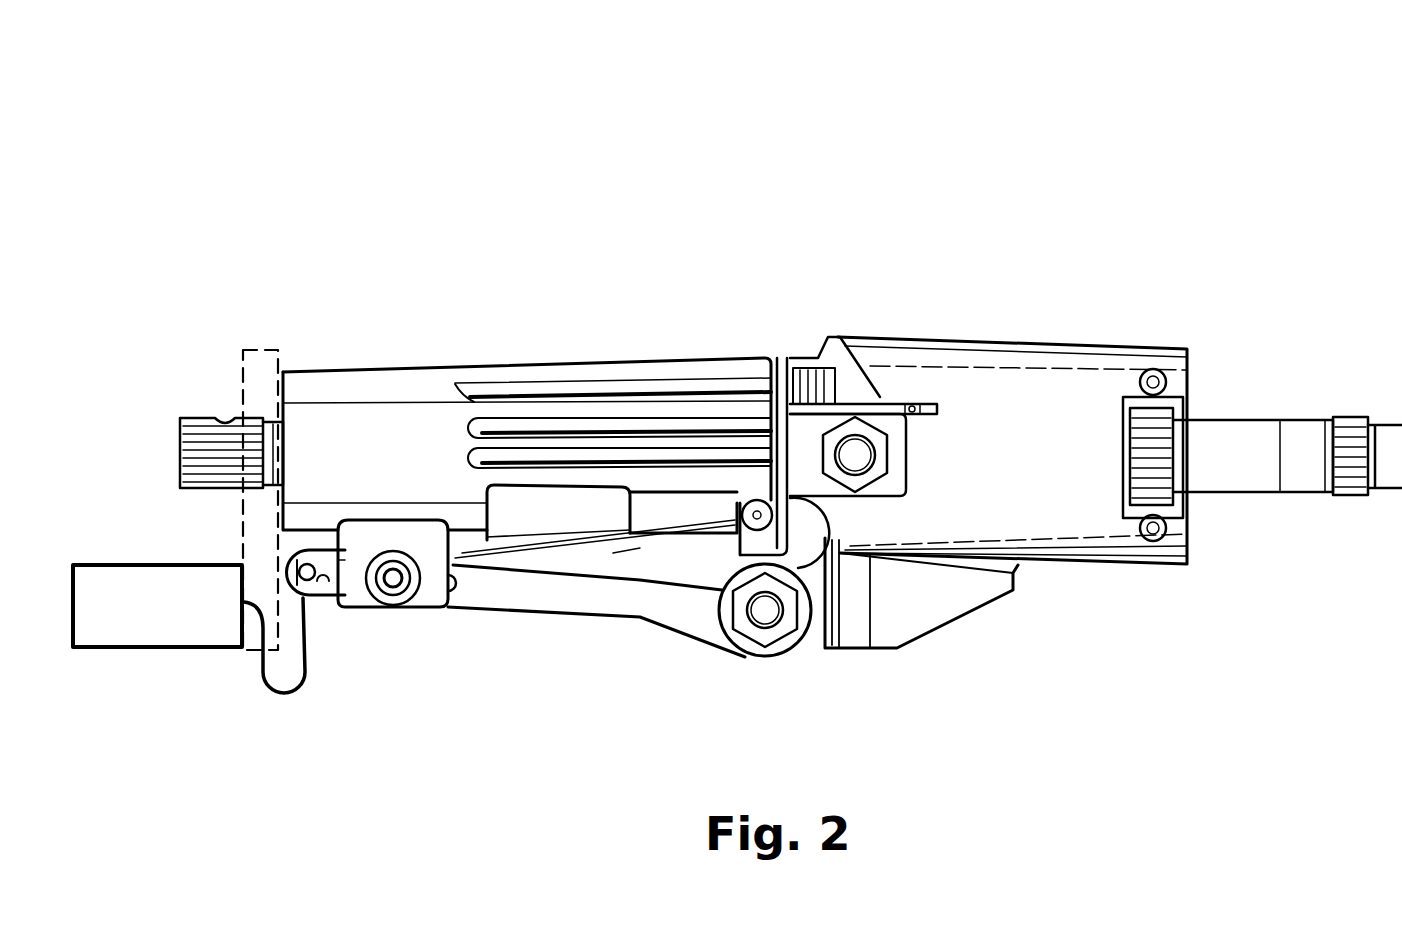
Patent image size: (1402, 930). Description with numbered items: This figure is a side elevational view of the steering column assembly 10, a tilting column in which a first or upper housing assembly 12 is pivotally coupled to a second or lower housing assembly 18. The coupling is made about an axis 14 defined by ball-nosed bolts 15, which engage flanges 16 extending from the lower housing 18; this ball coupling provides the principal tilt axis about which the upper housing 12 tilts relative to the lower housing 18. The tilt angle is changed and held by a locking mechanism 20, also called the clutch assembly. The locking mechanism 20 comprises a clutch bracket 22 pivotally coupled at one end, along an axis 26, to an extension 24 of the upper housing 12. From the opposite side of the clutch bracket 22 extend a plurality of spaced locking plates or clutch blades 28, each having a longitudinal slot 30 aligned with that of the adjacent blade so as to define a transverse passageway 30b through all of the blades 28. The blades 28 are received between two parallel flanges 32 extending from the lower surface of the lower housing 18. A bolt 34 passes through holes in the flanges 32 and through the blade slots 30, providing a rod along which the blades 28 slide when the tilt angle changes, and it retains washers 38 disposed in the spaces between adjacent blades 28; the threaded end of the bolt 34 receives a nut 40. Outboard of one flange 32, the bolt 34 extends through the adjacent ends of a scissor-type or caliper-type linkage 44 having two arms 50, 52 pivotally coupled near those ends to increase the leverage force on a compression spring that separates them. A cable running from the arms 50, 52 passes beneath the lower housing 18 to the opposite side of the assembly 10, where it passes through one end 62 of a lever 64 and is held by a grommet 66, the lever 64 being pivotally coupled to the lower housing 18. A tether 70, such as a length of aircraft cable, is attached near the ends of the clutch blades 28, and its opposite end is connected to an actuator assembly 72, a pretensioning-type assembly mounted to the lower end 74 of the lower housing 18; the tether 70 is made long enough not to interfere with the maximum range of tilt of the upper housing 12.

The steering column assembly 10 is at (973, 165).
The upper housing assembly 12 is at (1066, 350).
The axis 14 is at (857, 456).
The ball-nosed bolts 15 is at (887, 480).
The flanges 16 is at (860, 390).
The lower housing assembly 18 is at (448, 372).
The locking mechanism 20 is at (642, 669).
The clutch bracket 22 is at (649, 610).
The extension 24 is at (962, 600).
The axis 26 is at (772, 620).
The clutch blades 28 is at (502, 593).
The longitudinal slot 30 is at (325, 596).
The transverse passageway 30b is at (356, 669).
The flanges 32 is at (427, 597).
The bolt 34 is at (383, 573).
The washers 38 is at (383, 607).
The nut 40 is at (413, 572).
The linkage 44 is at (544, 528).
The arm 50 is at (517, 548).
The arm 52 is at (620, 555).
The end of lever 62 is at (757, 518).
The lever 64 is at (936, 405).
The grommet 66 is at (740, 522).
The tether 70 is at (272, 694).
The actuator assembly 72 is at (170, 618).
The lower end 74 is at (286, 376).